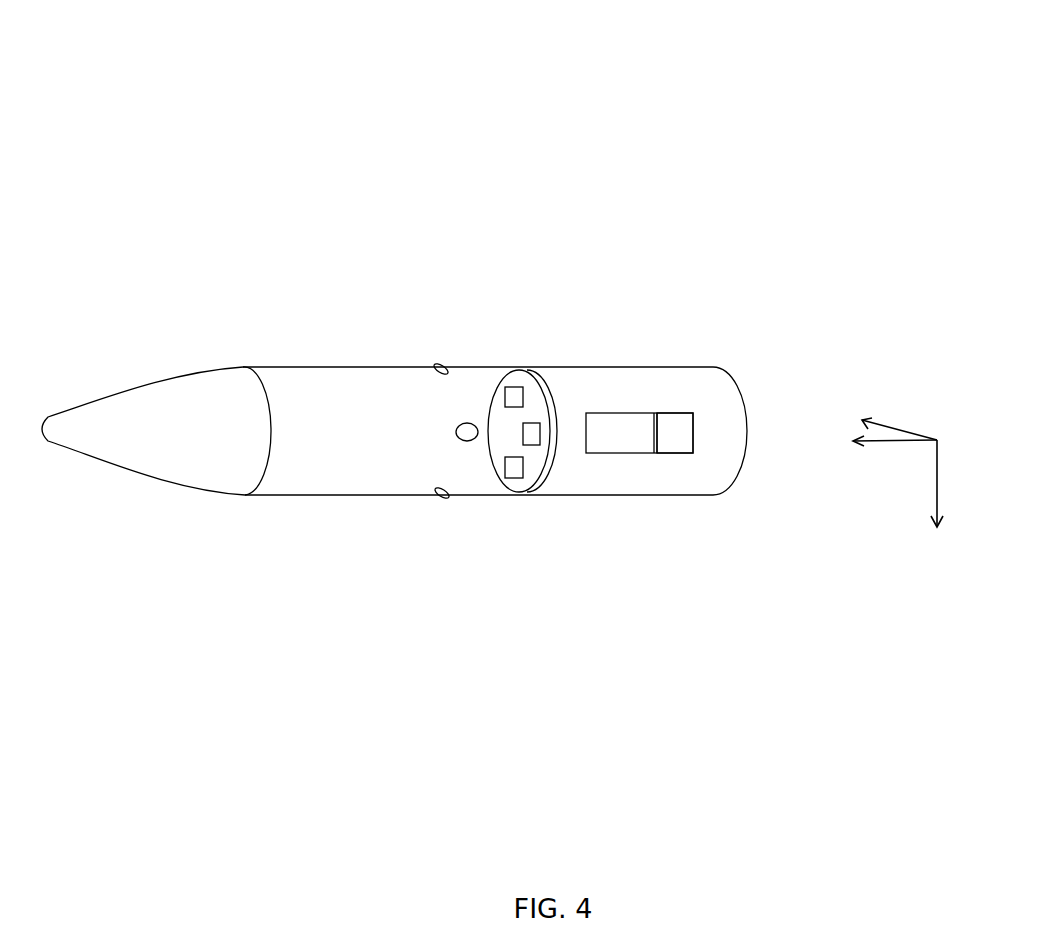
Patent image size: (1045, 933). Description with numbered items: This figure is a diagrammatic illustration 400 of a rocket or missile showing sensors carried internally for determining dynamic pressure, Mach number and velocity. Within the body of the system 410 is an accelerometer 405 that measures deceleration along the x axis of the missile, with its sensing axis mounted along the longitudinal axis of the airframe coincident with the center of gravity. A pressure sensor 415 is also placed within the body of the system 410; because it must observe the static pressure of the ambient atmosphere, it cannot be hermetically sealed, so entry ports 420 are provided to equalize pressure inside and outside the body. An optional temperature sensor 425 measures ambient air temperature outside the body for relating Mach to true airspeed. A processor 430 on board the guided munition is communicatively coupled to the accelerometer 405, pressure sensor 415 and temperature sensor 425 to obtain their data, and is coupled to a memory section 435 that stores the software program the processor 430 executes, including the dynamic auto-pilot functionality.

The diagrammatic illustration 400 is at (70, 60).
The accelerometer 405 is at (531, 423).
The system 410 is at (318, 500).
The pressure sensor 415 is at (513, 390).
The entry ports 420 is at (436, 489).
The temperature sensor 425 is at (503, 472).
The processor 430 is at (630, 453).
The memory section 435 is at (683, 427).